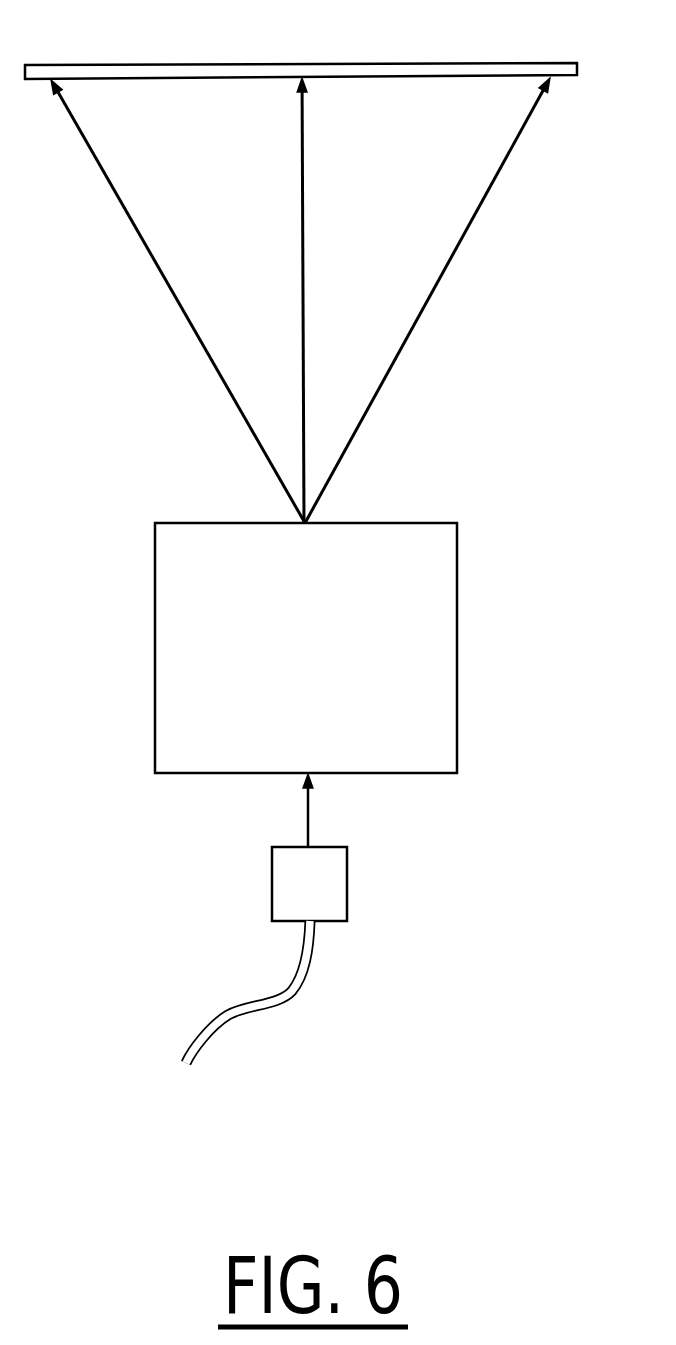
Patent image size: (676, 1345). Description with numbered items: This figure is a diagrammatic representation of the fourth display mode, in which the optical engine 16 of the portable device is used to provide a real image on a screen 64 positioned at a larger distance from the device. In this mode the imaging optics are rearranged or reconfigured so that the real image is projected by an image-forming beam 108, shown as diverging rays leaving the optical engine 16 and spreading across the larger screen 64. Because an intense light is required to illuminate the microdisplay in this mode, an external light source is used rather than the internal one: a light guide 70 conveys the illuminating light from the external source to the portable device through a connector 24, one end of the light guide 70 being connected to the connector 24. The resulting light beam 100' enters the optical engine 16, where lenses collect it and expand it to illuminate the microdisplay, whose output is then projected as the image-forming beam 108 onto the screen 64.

The screen 64 is at (500, 62).
The image-forming beam 108 is at (475, 213).
The optical engine 16 is at (442, 635).
The light beam 100' is at (371, 810).
The connector 24 is at (272, 878).
The light guide 70 is at (282, 1005).